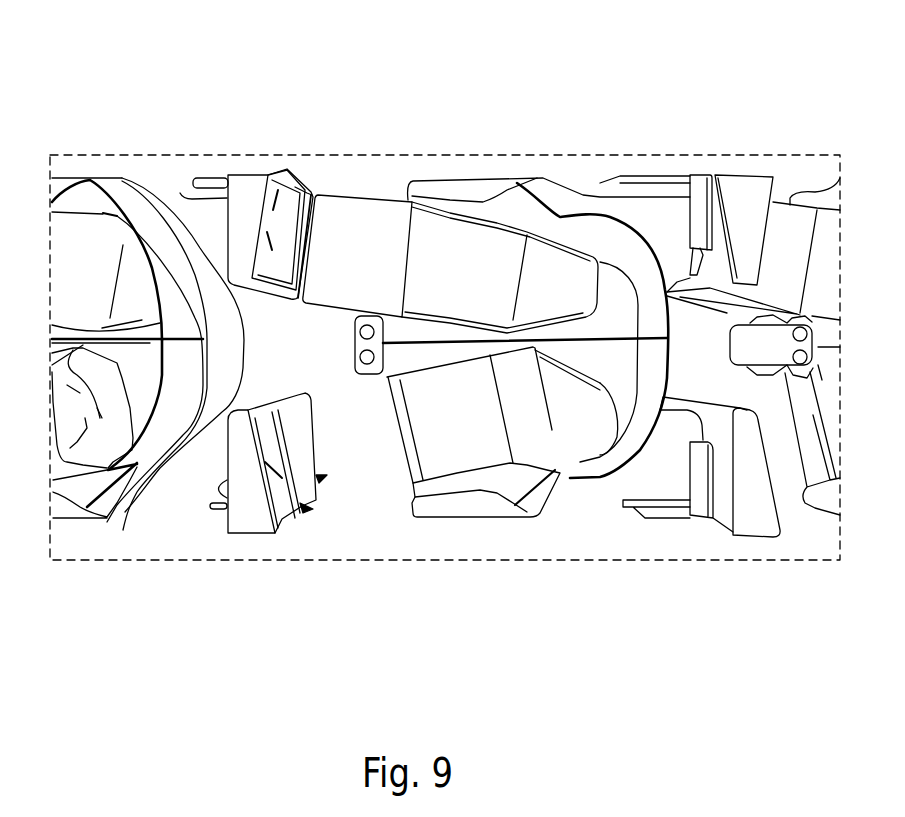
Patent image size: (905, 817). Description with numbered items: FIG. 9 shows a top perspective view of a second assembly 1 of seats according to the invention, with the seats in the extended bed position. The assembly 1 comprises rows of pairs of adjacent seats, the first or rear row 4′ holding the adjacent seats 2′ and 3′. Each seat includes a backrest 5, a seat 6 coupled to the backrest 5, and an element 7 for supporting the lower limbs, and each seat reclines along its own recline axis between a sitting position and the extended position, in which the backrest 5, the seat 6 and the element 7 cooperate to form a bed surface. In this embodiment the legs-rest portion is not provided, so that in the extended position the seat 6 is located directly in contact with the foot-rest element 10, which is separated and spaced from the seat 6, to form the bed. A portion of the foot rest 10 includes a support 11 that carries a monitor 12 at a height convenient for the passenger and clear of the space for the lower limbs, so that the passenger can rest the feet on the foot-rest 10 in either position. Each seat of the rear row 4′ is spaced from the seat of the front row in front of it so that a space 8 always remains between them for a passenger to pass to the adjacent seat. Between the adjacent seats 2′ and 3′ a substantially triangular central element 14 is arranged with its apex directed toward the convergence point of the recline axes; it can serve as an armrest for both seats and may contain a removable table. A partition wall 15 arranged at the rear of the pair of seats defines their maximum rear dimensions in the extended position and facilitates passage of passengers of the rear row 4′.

The assembly of seats 1 is at (574, 125).
The seat of the first row 2′ is at (378, 519).
The seat of the first row 3′ is at (378, 230).
The first row 4′ is at (441, 149).
The backrest 5 is at (497, 250).
The seat 6 is at (388, 184).
The element for supporting the lower limbs 7 is at (331, 184).
The space 8 is at (123, 530).
The foot-rest element 10 is at (180, 193).
The support 11 is at (293, 184).
The monitor 12 is at (287, 170).
The central element 14 is at (438, 333).
The partition wall 15 is at (107, 522).